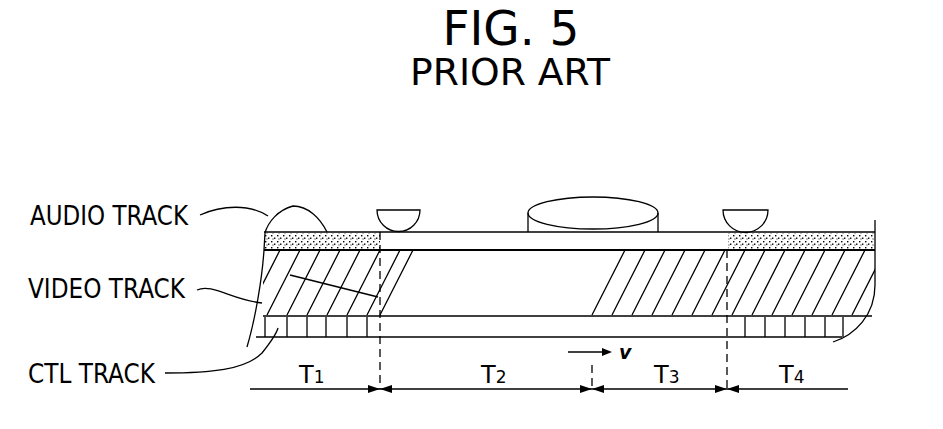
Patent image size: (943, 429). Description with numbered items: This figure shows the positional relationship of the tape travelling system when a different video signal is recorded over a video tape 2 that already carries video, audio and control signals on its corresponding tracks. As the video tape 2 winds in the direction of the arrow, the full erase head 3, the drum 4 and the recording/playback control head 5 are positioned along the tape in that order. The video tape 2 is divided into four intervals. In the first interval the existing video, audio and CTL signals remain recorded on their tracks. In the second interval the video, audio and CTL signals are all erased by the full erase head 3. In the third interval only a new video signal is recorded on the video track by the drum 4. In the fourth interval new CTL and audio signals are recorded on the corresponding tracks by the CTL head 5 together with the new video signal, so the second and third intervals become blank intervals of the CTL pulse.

The video tape 2 is at (494, 270).
The full erase head 3 is at (399, 218).
The drum 4 is at (616, 213).
The recording/playback control head 5 is at (749, 218).